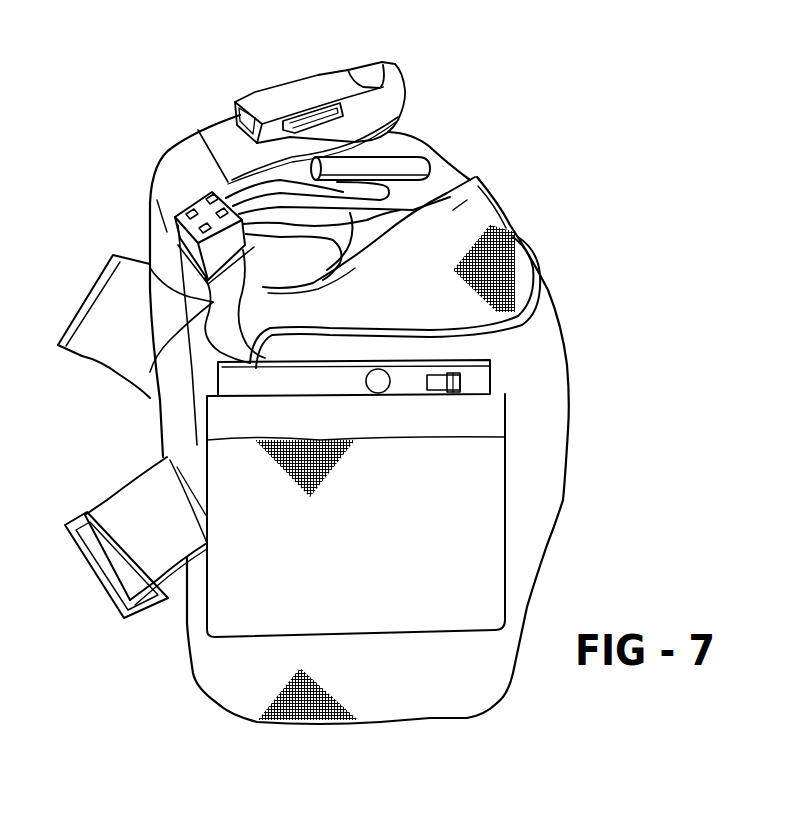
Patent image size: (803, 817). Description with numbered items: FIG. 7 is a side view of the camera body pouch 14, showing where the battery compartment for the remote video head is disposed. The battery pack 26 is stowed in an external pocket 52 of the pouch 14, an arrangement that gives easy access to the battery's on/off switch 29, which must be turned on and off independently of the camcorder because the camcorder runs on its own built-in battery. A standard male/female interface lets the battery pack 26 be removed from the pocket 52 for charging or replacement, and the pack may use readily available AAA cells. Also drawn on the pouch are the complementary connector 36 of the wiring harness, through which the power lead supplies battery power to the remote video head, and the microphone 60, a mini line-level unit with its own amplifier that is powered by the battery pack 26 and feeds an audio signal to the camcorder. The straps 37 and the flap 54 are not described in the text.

The pouch 14 is at (118, 127).
The battery pack 26 is at (242, 388).
The on/off switch 29 is at (460, 378).
The complementary connector 36 is at (178, 240).
The upper attachment strap 37 is at (150, 372).
The external pocket 52 is at (251, 625).
The pocket flap 54 is at (485, 214).
The microphone 60 is at (413, 163).